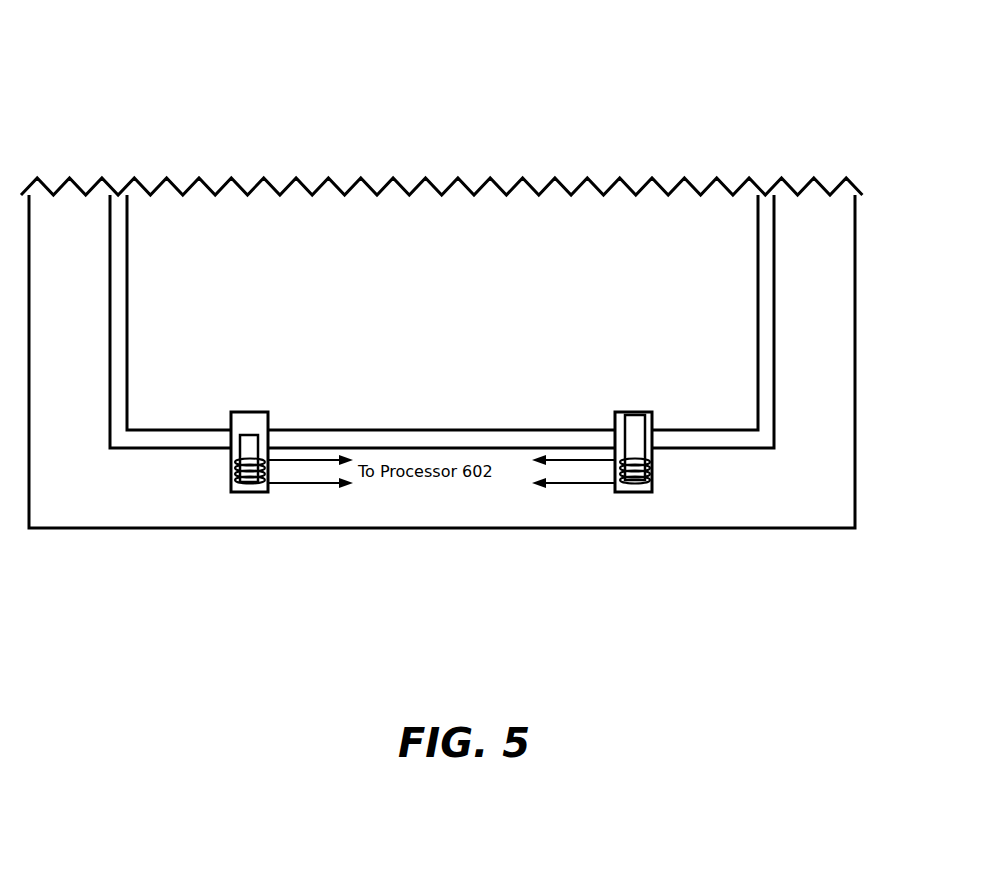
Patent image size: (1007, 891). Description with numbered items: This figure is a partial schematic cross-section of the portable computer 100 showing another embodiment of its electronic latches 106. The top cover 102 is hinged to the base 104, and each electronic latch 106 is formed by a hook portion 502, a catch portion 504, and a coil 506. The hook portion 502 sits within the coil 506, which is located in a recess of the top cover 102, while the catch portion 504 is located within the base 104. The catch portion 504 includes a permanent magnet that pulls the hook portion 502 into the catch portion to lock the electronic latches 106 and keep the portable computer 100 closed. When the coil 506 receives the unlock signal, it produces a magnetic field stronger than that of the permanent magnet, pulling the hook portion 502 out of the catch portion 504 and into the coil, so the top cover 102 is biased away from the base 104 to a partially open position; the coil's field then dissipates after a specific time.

The portable computer 100 is at (587, 99).
The top cover 102 is at (485, 515).
The base 104 is at (478, 430).
The electronic latches 106 is at (221, 419).
The hook portion 502 is at (243, 445).
The catch portion 504 is at (250, 422).
The coil 506 is at (245, 480).